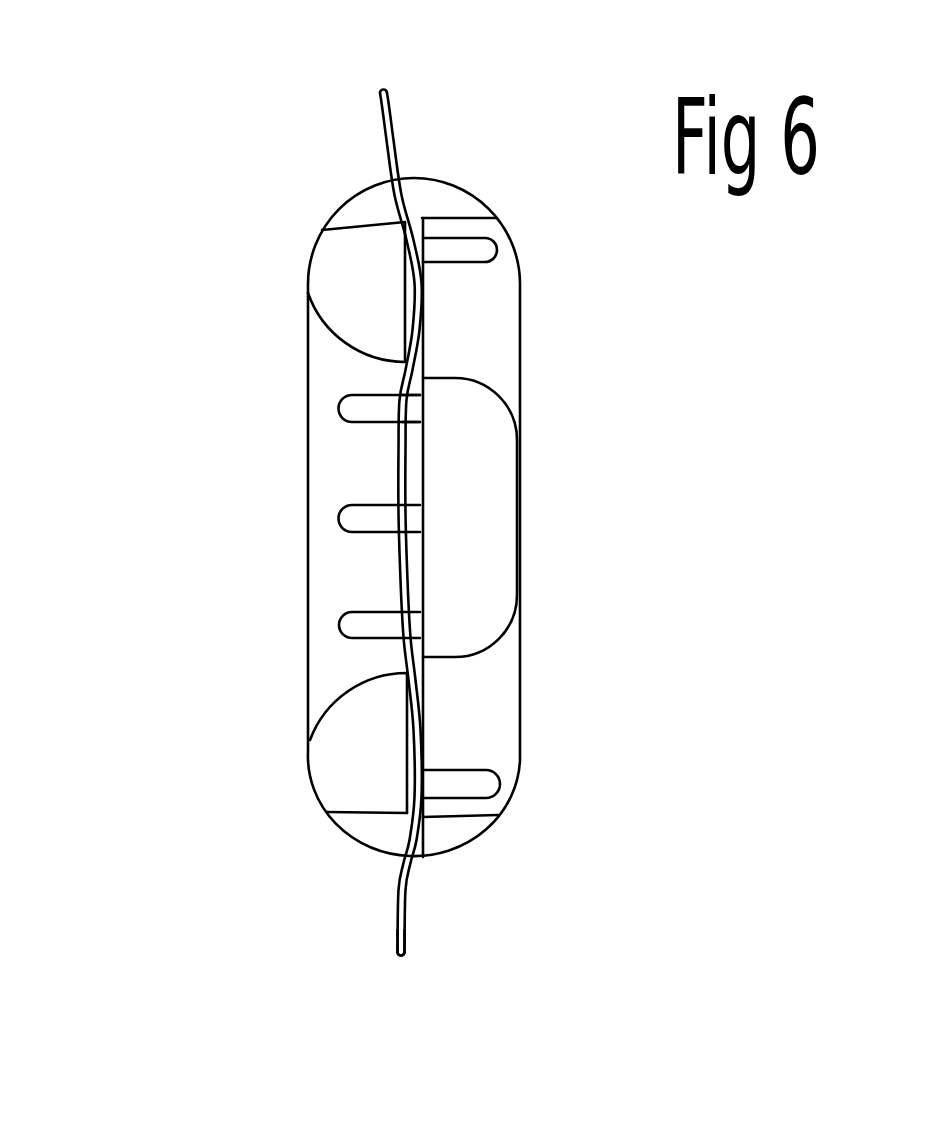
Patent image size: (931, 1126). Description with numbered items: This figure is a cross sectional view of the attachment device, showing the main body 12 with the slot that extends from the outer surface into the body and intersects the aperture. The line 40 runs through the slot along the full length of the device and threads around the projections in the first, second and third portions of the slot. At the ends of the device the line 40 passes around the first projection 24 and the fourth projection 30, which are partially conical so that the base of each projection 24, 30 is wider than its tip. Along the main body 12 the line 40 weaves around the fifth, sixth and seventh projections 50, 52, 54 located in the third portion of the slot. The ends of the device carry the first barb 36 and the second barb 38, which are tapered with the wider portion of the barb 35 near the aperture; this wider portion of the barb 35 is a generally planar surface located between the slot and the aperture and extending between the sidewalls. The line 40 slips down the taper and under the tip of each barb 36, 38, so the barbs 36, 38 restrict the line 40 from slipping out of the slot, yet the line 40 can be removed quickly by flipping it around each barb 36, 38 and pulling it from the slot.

The main body 12 is at (343, 462).
The first projection 24 is at (483, 255).
The fourth projection 30 is at (483, 784).
The wider portion of the barb 35 is at (422, 195).
The first barb 36 is at (468, 830).
The second barb 38 is at (436, 200).
The line 40 is at (405, 942).
The fifth projection 50 is at (365, 410).
The sixth projection 52 is at (358, 518).
The seventh projection 54 is at (362, 622).